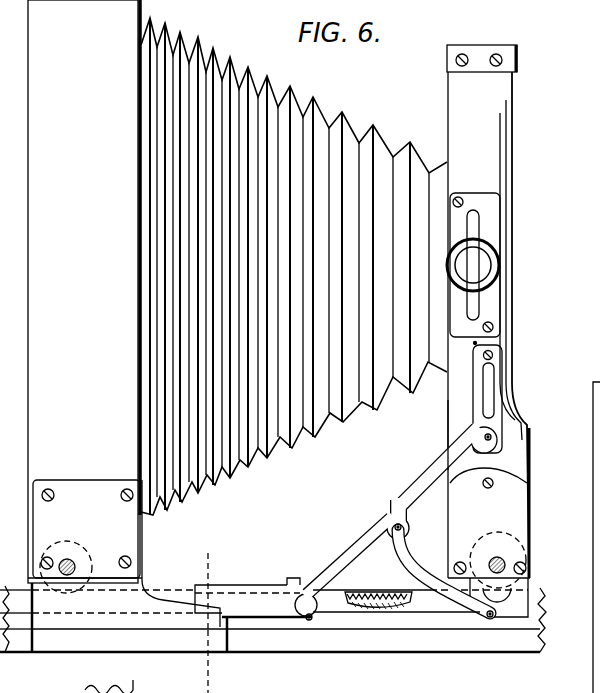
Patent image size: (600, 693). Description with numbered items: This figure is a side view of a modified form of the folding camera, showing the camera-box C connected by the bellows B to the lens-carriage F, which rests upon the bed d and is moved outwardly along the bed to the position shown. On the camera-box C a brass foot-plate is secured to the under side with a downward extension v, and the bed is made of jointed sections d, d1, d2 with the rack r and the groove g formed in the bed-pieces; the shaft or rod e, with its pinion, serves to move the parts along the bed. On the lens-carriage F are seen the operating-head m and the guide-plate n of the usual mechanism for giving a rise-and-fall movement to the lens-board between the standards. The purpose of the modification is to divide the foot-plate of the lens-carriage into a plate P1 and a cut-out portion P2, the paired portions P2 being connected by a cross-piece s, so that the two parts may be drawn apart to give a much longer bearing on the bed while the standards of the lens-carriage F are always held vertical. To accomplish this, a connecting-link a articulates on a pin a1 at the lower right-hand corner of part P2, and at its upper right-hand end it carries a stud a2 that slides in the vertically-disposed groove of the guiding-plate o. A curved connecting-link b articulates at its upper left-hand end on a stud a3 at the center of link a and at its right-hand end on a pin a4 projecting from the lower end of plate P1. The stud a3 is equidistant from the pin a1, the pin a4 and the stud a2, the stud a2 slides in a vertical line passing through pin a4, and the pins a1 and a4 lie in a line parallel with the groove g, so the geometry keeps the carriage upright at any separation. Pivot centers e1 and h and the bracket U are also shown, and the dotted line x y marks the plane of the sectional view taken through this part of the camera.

The camera-box C is at (85, 291).
The bellows B is at (232, 458).
The lens-carriage F is at (488, 311).
The guide-plate n is at (475, 265).
The operating-head m is at (473, 265).
The guiding-plate o is at (495, 402).
The connecting-link a is at (353, 548).
The pin or stud a1 is at (313, 617).
The stud a2 is at (492, 437).
The stud a3 is at (401, 527).
The pin or rivet a4 is at (491, 618).
The connecting-link b is at (408, 562).
The foot-plate P1 is at (489, 542).
The cut portion of foot-plate P2 is at (253, 601).
The pivot circle h is at (58, 542).
The shaft or rod e is at (72, 562).
The pivot pin e1 is at (503, 562).
The cross-piece s is at (307, 580).
The rack r is at (384, 590).
The groove g is at (398, 620).
The bracket U is at (143, 578).
The downward extension v is at (113, 604).
The bed d is at (152, 640).
The base section d1 is at (305, 643).
The base section d2 is at (13, 642).
The section line x is at (206, 583).
The section line y is at (206, 661).